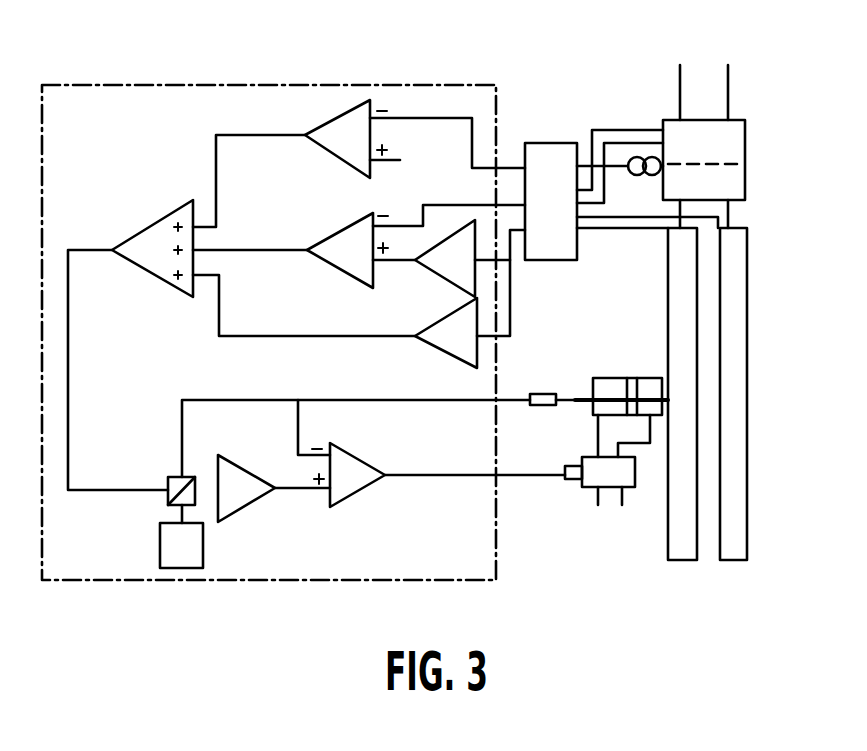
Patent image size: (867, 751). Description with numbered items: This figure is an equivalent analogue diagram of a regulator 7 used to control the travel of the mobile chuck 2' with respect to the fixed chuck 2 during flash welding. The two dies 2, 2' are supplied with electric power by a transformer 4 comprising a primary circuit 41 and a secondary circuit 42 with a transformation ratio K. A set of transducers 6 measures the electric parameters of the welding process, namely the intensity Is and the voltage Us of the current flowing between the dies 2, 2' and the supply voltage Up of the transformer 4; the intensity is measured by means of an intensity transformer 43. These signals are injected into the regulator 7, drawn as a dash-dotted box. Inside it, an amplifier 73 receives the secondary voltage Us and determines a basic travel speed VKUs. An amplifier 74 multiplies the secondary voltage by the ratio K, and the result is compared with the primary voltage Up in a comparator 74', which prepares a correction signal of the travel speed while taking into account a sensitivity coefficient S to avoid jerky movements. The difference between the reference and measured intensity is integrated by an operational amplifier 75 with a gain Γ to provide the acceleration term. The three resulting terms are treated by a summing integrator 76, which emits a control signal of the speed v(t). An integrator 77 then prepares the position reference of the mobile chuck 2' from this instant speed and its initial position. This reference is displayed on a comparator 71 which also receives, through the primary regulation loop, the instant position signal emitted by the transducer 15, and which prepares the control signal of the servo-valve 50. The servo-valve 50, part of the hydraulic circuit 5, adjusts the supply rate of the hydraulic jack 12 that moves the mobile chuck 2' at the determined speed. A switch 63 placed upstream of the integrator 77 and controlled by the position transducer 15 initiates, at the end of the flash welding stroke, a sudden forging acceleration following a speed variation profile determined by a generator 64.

The regulator 7 is at (120, 78).
The summing integrator 76 is at (142, 232).
The operational amplifier 75 is at (336, 155).
The comparator 74' is at (407, 262).
The amplifier 74 is at (450, 269).
The amplifier 73 is at (446, 352).
The set of transducers 6 is at (549, 143).
The intensity transformer 43 is at (635, 157).
The transformer 4 is at (741, 146).
The primary circuit 41 is at (733, 133).
The secondary circuit 42 is at (733, 182).
The mobile chuck 2' is at (671, 428).
The fixed chuck 2 is at (726, 427).
The position transducer 15 is at (541, 393).
The hydraulic jack 12 is at (607, 378).
The servo-valve 50 is at (587, 457).
The hydraulic circuit 5 is at (585, 498).
The switch 63 is at (170, 478).
The generator 64 is at (160, 535).
The integrator 77 is at (250, 505).
The comparator 71 is at (350, 495).